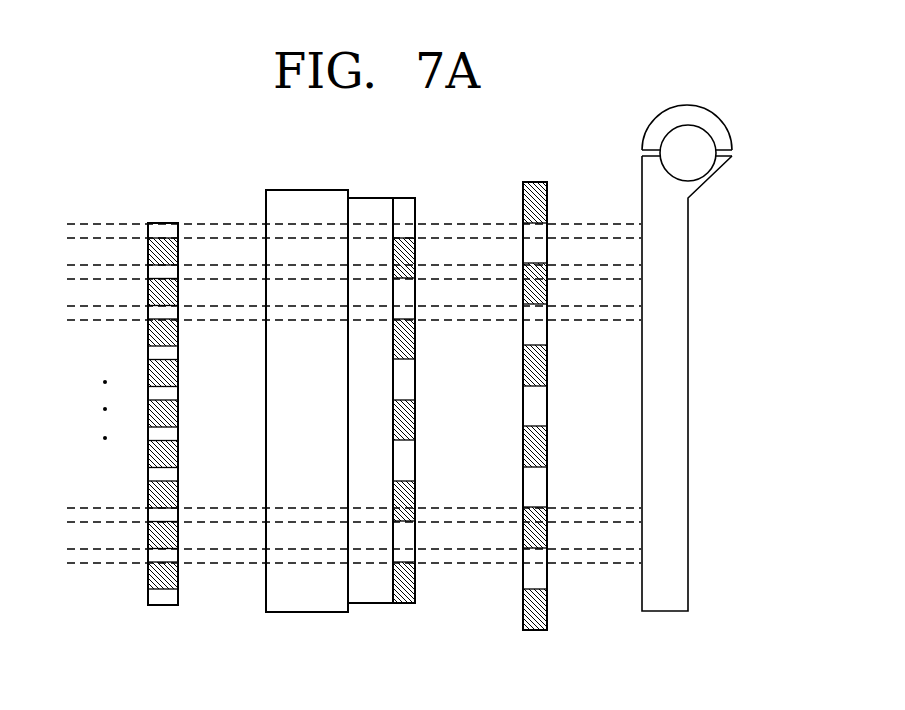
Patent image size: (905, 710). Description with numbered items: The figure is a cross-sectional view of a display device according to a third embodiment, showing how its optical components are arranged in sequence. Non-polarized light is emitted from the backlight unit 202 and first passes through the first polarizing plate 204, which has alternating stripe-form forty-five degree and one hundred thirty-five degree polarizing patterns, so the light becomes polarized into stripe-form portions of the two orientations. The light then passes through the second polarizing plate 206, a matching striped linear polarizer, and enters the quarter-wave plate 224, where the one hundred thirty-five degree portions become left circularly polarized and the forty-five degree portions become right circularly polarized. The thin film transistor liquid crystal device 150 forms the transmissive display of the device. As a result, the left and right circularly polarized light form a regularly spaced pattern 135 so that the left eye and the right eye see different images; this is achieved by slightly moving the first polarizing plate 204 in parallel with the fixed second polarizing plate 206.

The regularly spaced pattern 135 is at (163, 217).
The thin film transistor liquid crystal device 150 is at (310, 612).
The λ/4 plate 224 is at (370, 603).
The second polarizing plate 206 is at (413, 603).
The first polarizing plate 204 is at (540, 630).
The backlight unit 202 is at (643, 123).